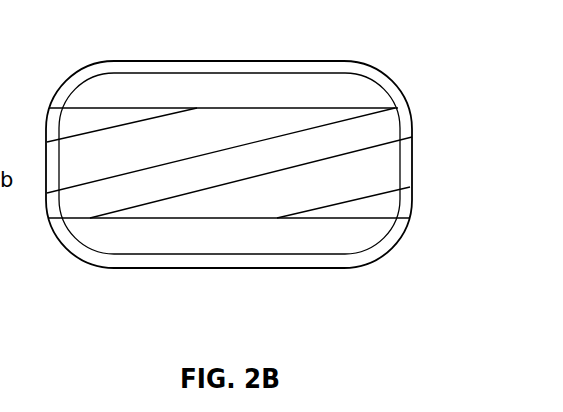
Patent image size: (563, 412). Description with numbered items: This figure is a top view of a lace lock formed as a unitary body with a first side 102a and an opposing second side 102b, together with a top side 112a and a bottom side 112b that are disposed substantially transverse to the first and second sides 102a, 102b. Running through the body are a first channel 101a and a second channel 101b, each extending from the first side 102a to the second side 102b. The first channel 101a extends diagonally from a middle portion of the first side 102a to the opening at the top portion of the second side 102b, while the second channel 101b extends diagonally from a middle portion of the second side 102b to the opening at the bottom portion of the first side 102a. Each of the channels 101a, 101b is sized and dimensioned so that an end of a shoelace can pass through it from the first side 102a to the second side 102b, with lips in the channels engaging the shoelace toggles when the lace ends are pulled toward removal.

The first channel 101a is at (106, 127).
The second channel 101b is at (328, 165).
The first side 102a is at (45, 165).
The second side 102b is at (412, 150).
The top side 112a is at (240, 60).
The bottom side 112b is at (222, 269).